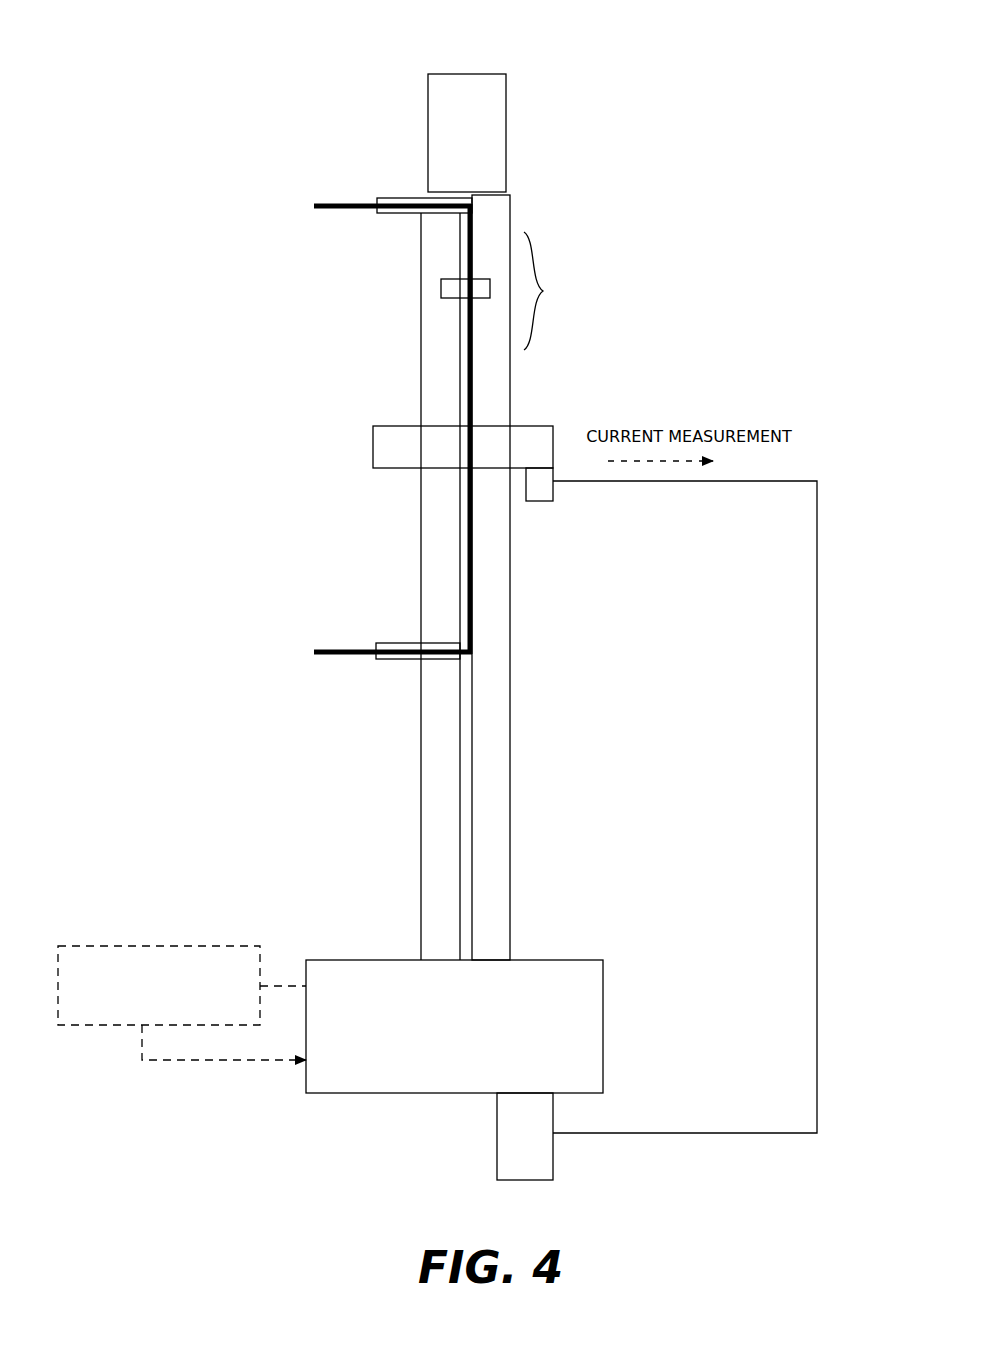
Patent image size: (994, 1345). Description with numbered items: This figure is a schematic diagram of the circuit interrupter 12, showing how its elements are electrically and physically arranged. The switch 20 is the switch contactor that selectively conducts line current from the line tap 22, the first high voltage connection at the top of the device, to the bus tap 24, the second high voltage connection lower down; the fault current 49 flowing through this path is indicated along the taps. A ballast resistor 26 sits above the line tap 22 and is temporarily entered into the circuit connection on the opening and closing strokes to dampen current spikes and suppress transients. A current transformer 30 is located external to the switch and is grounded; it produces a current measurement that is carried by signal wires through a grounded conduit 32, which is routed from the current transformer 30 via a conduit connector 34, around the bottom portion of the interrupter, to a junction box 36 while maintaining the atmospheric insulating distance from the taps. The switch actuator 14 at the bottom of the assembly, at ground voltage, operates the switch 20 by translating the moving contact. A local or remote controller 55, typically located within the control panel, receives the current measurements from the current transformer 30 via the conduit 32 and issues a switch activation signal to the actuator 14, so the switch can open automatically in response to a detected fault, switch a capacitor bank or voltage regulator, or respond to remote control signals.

The circuit interrupter 12 is at (779, 61).
The switch actuator 14 is at (454, 1009).
The switch 20 is at (539, 577).
The line tap 22 is at (377, 198).
The bus tap 24 is at (376, 650).
The ballast resistor 26 is at (480, 74).
The current transformer 30 is at (373, 427).
The conduit 32 is at (730, 1133).
The conduit connector 34 is at (540, 490).
The junction box 36 is at (497, 1138).
The fault current 49 is at (328, 655).
The local or remote controller 55 is at (182, 1019).